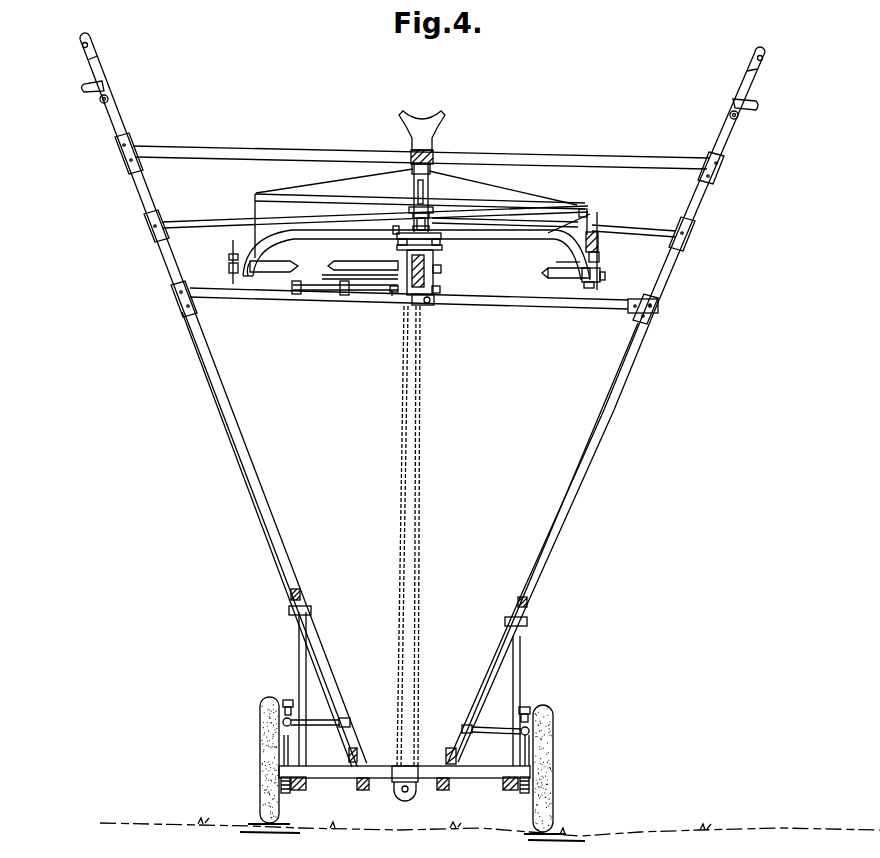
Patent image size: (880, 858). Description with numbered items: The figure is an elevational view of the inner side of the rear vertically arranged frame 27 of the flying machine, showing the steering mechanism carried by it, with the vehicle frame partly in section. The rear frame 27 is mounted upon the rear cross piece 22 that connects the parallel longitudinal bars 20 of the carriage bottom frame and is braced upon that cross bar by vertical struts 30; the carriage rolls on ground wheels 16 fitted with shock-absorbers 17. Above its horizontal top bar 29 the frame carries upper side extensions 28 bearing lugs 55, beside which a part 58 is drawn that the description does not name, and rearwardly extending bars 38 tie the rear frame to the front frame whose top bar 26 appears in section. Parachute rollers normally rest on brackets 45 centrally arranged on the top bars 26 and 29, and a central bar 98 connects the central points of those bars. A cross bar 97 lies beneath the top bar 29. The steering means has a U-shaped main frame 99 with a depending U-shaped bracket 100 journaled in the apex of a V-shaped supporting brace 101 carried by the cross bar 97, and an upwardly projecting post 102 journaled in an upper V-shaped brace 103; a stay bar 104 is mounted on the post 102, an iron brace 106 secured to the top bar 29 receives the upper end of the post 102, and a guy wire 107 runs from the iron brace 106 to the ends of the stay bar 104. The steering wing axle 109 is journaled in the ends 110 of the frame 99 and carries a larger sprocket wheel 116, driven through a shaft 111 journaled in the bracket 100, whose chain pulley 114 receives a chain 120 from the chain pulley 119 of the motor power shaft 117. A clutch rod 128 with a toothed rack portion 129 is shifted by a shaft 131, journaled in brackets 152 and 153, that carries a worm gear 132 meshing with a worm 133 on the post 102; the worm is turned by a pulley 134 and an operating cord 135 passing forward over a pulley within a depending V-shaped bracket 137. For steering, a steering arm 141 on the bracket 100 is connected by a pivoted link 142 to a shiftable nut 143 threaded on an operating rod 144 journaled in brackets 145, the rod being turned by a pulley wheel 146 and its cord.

The ground wheels 16 is at (258, 709).
The shock-absorbers 17 is at (288, 795).
The longitudinal bars 20 is at (308, 790).
The rear cross piece 22 is at (480, 770).
The top bar 26 is at (120, 121).
The rear frame 27 is at (588, 452).
The upper side extensions 28 is at (726, 149).
The top bar 29 is at (632, 158).
The vertical struts 30 is at (299, 650).
The rearwardly extending bars 38 is at (291, 594).
The brackets 45 is at (420, 120).
The lugs 55 is at (84, 88).
The pin 58 is at (99, 102).
The cross bar 97 is at (525, 306).
The central bar 98 is at (436, 158).
The U-shaped main frame 99 is at (518, 243).
The U-shaped bracket 100 is at (408, 262).
The V-shaped supporting brace 101 is at (626, 309).
The post 102 is at (421, 198).
The upper V-shaped brace 103 is at (642, 227).
The stay bar 104 is at (476, 204).
The iron brace 106 is at (413, 168).
The guy wire 107 is at (322, 184).
The axle 109 is at (296, 260).
The ends 110 is at (250, 262).
The shaft 111 is at (355, 265).
The chain pulley 114 is at (441, 268).
The sprocket wheel 116 is at (229, 276).
The power shaft 117 is at (398, 791).
The chain pulley 119 is at (406, 796).
The chain 120 is at (404, 533).
The rod 128 is at (586, 285).
The toothed rack portion 129 is at (600, 252).
The shaft 131 is at (590, 214).
The worm gear 132 is at (393, 229).
The worm 133 is at (429, 228).
The pulley 134 is at (418, 222).
The operating cord 135 is at (421, 221).
The V-shaped bracket 137 is at (593, 234).
The steering arm 141 is at (400, 279).
The pivoted link 142 is at (392, 292).
The shiftable nut 143 is at (345, 295).
The operating rod 144 is at (325, 292).
The brackets 145 is at (296, 294).
The pulley wheel 146 is at (437, 304).
The bracket 152 is at (397, 238).
The bracket 153 is at (575, 263).